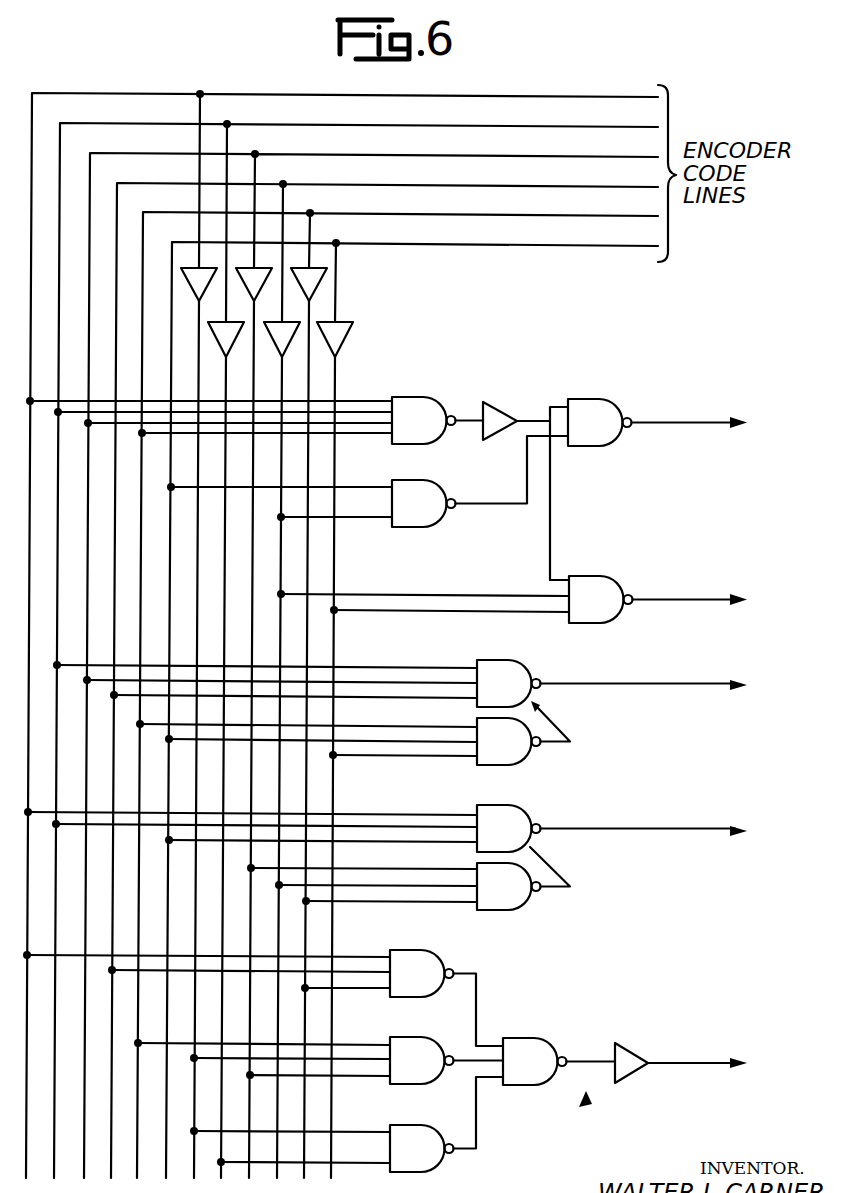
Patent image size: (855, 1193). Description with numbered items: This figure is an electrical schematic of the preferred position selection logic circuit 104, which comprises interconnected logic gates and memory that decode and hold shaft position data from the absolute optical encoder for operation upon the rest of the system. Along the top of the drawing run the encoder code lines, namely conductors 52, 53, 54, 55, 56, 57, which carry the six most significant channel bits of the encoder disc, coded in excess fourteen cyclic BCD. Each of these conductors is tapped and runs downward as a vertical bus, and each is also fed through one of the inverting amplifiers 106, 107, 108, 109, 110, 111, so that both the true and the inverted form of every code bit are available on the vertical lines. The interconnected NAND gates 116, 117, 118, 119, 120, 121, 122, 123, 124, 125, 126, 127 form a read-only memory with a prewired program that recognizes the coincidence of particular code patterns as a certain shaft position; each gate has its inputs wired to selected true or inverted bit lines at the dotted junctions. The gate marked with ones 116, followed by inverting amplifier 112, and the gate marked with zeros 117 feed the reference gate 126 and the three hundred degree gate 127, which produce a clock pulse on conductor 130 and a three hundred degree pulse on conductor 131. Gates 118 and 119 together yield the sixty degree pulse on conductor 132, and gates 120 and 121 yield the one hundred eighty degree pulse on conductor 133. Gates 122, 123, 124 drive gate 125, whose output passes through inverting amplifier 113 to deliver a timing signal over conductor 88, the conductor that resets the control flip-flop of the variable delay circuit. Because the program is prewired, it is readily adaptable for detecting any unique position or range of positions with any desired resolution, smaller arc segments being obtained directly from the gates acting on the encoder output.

The conductor 52 is at (601, 95).
The conductor 53 is at (573, 126).
The conductor 54 is at (558, 157).
The conductor 55 is at (546, 186).
The conductor 56 is at (533, 215).
The conductor 57 is at (521, 244).
The conductor 88 is at (720, 1062).
The position selection logic circuit 104 is at (582, 1108).
The inverting amplifier 106 is at (183, 266).
The inverting amplifier 107 is at (238, 342).
The inverting amplifier 108 is at (266, 269).
The inverting amplifier 109 is at (298, 324).
The inverting amplifier 110 is at (318, 287).
The inverting amplifier 111 is at (352, 336).
The inverting amplifier 112 is at (500, 403).
The inverting amplifier 113 is at (635, 1052).
The NAND gate 116 is at (422, 397).
The NAND gate 117 is at (431, 470).
The NAND gate 118 is at (497, 661).
The NAND gate 119 is at (510, 766).
The NAND gate 120 is at (530, 811).
The NAND gate 121 is at (506, 910).
The NAND gate 122 is at (425, 950).
The NAND gate 123 is at (418, 1037).
The NAND gate 124 is at (431, 1104).
The NAND gate 125 is at (530, 1038).
The NAND gate 126 is at (605, 399).
The NAND gate 127 is at (607, 576).
The conductor 130 is at (740, 419).
The conductor 131 is at (745, 606).
The conductor 132 is at (745, 686).
The conductor 133 is at (742, 831).